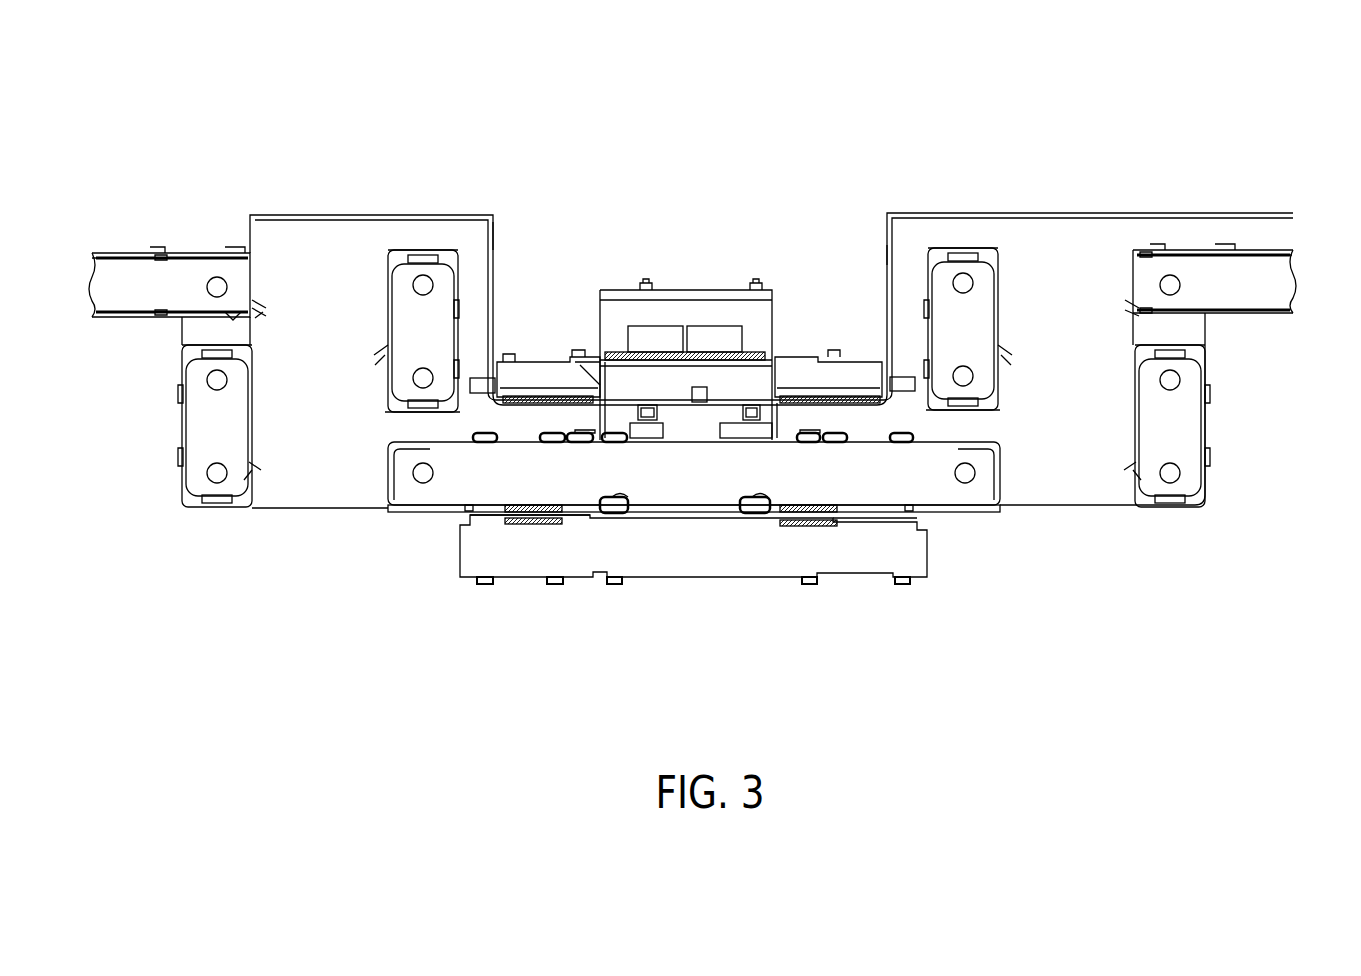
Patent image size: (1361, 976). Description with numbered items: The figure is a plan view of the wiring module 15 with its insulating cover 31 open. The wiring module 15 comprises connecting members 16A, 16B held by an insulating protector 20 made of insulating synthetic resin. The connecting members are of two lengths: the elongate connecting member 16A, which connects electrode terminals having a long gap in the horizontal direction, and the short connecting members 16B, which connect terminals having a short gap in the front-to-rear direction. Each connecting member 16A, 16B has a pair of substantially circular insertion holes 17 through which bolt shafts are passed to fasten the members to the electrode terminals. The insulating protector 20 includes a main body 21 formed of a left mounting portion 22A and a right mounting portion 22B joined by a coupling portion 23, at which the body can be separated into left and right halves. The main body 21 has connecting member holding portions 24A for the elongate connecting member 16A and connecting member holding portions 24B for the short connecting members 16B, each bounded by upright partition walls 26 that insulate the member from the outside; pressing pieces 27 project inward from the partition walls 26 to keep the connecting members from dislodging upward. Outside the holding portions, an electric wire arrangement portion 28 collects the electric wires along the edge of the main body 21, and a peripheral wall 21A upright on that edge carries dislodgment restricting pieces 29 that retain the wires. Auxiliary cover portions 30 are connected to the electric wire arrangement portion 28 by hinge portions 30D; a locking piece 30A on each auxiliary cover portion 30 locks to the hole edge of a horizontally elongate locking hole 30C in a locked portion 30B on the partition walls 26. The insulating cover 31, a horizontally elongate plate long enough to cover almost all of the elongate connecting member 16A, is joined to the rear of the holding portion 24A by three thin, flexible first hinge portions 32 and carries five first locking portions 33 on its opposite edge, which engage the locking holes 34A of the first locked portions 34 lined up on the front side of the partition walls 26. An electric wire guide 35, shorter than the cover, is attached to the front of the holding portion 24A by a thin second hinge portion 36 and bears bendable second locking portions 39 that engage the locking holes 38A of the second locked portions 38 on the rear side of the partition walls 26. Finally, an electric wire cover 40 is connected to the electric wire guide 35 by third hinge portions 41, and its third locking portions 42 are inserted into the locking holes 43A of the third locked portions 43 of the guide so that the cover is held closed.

The wiring module 15 is at (1062, 640).
The elongate connecting member 16A is at (125, 270).
The short connecting member 16B is at (412, 272).
The insertion hole 17 is at (222, 280).
The insulating protector 20 is at (955, 145).
The main body 21 is at (1087, 492).
The peripheral wall 21A is at (498, 255).
The left mounting portion 22A is at (327, 212).
The right mounting portion 22B is at (1127, 208).
The coupling portion 23 is at (620, 648).
The connecting member holding portion 24A is at (105, 255).
The connecting member holding portion 24B is at (448, 262).
The partition wall 26 is at (405, 272).
The pressing piece 27 is at (158, 312).
The electric wire arrangement portion 28 is at (497, 222).
The dislodgment restricting piece 29 is at (887, 253).
The auxiliary cover portion 30 is at (497, 385).
The locking piece 30A is at (513, 357).
The locked portion 30B is at (462, 540).
The locking hole 30C is at (540, 392).
The hinge portion 30D is at (497, 522).
The insulating cover 31 is at (725, 470).
The first hinge portion 32 is at (545, 526).
The first locking portion 33 is at (485, 586).
The first locked portion 34 is at (552, 432).
The locking hole 34A is at (580, 430).
The electric wire guide 35 is at (690, 515).
The second hinge portion 36 is at (713, 545).
The second locked portion 38 is at (615, 515).
The locking hole 38A is at (640, 520).
The second locking portion 39 is at (612, 352).
The electric wire cover 40 is at (688, 300).
The third hinge portion 41 is at (665, 340).
The third locking portion 42 is at (646, 280).
The third locked portion 43 is at (642, 405).
The locking hole 43A is at (630, 385).